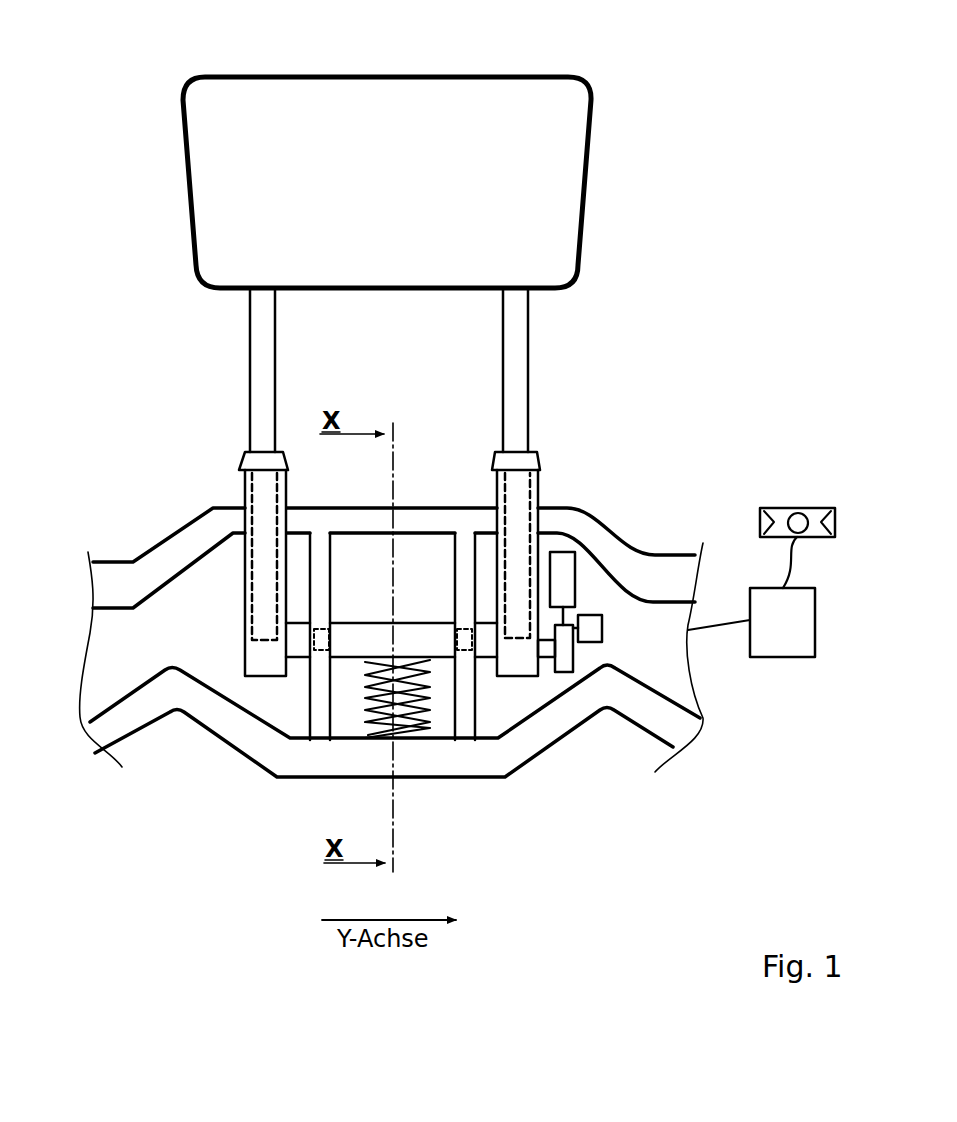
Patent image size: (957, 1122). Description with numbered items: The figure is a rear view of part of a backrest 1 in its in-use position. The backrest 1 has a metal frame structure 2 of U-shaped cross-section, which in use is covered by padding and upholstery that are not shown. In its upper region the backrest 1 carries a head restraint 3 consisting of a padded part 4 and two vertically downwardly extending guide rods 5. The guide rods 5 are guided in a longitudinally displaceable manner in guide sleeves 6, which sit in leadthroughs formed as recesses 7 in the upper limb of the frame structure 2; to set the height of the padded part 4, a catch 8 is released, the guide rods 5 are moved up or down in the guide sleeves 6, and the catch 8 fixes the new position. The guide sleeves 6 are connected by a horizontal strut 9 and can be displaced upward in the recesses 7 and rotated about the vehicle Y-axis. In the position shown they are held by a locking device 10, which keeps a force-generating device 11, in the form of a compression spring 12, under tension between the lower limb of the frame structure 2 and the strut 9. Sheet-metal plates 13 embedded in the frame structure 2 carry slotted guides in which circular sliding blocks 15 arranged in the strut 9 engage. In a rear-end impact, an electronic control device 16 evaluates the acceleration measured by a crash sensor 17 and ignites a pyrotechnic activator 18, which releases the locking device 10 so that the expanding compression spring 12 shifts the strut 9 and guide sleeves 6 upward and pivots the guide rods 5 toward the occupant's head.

The backrest 1 is at (680, 478).
The frame structure 2 is at (123, 585).
The head restraint 3 is at (620, 145).
The padded part 4 is at (418, 91).
The guide rods 5 is at (263, 344).
The guide sleeves 6 is at (248, 488).
The recesses 7 is at (263, 523).
The catch 8 is at (530, 453).
The strut 9 is at (372, 633).
The locking device 10 is at (563, 661).
The force-generating device 11 is at (427, 800).
The compression spring 12 is at (420, 731).
The sheet-metal plates 13 is at (315, 737).
The sliding blocks 15 is at (313, 632).
The electronic control device 16 is at (798, 635).
The crash sensor 17 is at (782, 508).
The pyrotechnic activator 18 is at (567, 567).